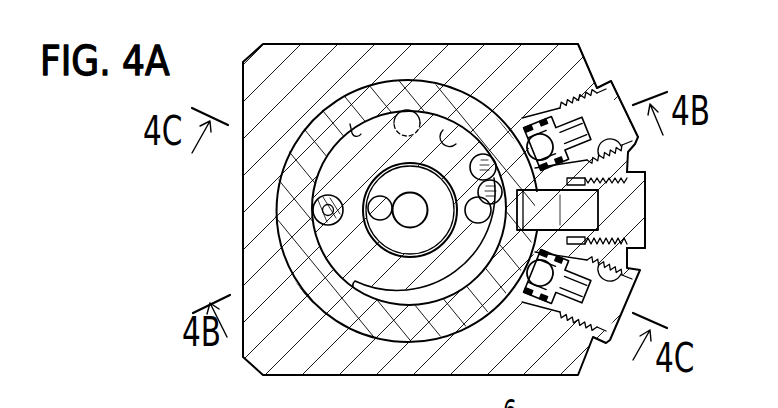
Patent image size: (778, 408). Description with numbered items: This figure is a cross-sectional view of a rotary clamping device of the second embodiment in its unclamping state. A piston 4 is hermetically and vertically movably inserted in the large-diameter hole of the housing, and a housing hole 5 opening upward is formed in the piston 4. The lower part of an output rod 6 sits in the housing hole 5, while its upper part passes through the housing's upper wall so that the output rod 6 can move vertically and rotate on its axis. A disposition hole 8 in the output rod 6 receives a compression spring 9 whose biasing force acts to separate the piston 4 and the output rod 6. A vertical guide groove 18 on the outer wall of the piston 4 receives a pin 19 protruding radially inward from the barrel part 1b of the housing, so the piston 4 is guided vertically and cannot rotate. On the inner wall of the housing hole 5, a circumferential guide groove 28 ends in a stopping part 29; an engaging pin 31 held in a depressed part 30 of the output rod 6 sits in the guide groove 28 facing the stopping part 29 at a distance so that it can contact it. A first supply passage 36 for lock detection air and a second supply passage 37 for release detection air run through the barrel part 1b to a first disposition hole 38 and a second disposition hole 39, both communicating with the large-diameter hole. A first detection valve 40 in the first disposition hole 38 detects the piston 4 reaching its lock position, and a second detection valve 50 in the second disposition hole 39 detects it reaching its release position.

The barrel part 1b is at (490, 58).
The piston 4 is at (317, 140).
The housing hole 5 is at (446, 136).
The output rod 6 is at (429, 135).
The disposition hole 8 is at (425, 237).
The compression spring 9 is at (382, 205).
The guide groove 18 is at (523, 219).
The pin 19 is at (587, 204).
The guide groove 28 is at (352, 130).
The stopping part 29 is at (407, 110).
The depressed part 30 is at (313, 219).
The engaging pin 31 is at (392, 108).
The first supply passage 36 is at (527, 136).
The second supply passage 37 is at (585, 297).
The first disposition hole 38 is at (633, 144).
The second disposition hole 39 is at (605, 340).
The first detection valve 40 is at (580, 90).
The second detection valve 50 is at (651, 268).